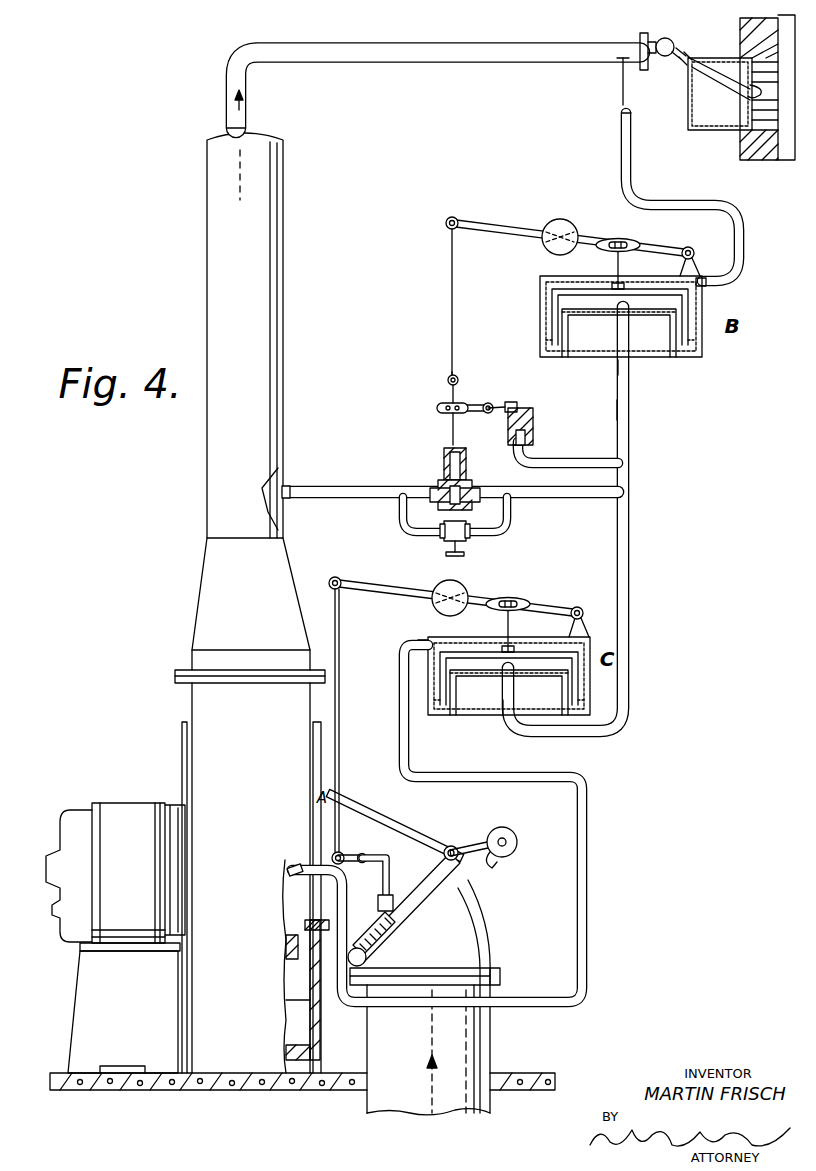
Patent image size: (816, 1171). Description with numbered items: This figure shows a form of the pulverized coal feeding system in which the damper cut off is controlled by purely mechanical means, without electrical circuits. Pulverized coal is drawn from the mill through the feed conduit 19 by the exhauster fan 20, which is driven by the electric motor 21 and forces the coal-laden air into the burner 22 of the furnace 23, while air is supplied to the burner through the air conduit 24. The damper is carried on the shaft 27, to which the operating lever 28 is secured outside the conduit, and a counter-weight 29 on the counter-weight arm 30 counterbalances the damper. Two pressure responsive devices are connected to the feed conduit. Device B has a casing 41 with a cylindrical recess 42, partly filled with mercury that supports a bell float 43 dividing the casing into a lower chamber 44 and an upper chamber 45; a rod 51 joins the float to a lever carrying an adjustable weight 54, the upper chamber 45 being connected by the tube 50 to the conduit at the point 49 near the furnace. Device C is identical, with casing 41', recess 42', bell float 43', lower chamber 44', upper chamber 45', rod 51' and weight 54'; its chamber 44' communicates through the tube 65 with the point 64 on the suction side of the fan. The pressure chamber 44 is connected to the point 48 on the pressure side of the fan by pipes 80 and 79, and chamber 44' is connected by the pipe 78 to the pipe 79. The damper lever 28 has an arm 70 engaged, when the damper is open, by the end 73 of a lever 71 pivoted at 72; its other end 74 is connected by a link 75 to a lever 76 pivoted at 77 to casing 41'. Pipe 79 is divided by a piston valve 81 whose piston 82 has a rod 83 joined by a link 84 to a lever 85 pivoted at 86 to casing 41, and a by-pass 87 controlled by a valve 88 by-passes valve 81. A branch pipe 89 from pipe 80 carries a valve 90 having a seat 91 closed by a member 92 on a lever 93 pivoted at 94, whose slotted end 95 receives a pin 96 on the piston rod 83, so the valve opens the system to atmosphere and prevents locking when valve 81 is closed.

The feed conduit 19 is at (250, 152).
The exhauster fan 20 is at (285, 1010).
The electric motor 21 is at (114, 812).
The burner 22 is at (700, 58).
The furnace 23 is at (787, 155).
The air conduit 24 is at (716, 122).
The shaft 27 is at (452, 846).
The operating lever 28 is at (410, 912).
The counter-weight 29 is at (512, 835).
The counter-weight arm 30 is at (497, 865).
The casing 41 is at (715, 321).
The casing 41' is at (519, 675).
The cylindrical recess 42 is at (644, 368).
The cylindrical recess 42' is at (488, 721).
The bell float 43 is at (599, 316).
The bell float 43' is at (500, 663).
The lower chamber 44 is at (619, 332).
The lower chamber 44' is at (509, 692).
The upper chamber 45 is at (621, 298).
The upper chamber 45' is at (509, 659).
The point adjacent the pressure side of the exhauster fan 48 is at (272, 500).
The point adjacent the furnace 49 is at (618, 62).
The tube 50 is at (622, 116).
The rod 51 is at (635, 269).
The rod 51' is at (526, 631).
The weight 54 is at (571, 227).
The weight 54' is at (436, 590).
The point adjacent the suction side of the exhauster fan 64 is at (288, 870).
The tube 65 is at (399, 684).
The arm 70 is at (377, 906).
The lever 71 is at (398, 838).
The pivot 72 is at (340, 853).
The end of lever 73 is at (390, 893).
The end of lever 74 is at (363, 863).
The link 75 is at (342, 760).
The lever 76 is at (478, 596).
The pivot 77 is at (581, 607).
The pipe 78 is at (630, 572).
The pipe 79 is at (554, 495).
The pipe 80 is at (631, 408).
The valve 81 is at (470, 480).
The piston 82 is at (444, 468).
The piston rod 83 is at (447, 382).
The link 84 is at (451, 303).
The lever 85 is at (509, 229).
The pivot 86 is at (690, 249).
The by-pass 87 is at (408, 530).
The valve 88 is at (466, 548).
The branch pipe 89 is at (582, 460).
The valve 90 is at (530, 456).
The seat 91 is at (534, 424).
The member 92 is at (524, 409).
The lever 93 is at (459, 381).
The pivot 94 is at (495, 405).
The slot 95 is at (437, 408).
The pin 96 is at (448, 416).